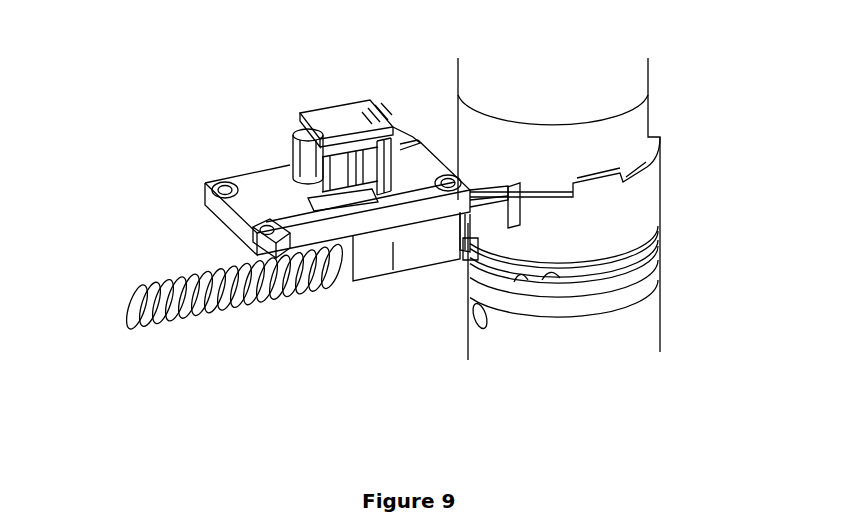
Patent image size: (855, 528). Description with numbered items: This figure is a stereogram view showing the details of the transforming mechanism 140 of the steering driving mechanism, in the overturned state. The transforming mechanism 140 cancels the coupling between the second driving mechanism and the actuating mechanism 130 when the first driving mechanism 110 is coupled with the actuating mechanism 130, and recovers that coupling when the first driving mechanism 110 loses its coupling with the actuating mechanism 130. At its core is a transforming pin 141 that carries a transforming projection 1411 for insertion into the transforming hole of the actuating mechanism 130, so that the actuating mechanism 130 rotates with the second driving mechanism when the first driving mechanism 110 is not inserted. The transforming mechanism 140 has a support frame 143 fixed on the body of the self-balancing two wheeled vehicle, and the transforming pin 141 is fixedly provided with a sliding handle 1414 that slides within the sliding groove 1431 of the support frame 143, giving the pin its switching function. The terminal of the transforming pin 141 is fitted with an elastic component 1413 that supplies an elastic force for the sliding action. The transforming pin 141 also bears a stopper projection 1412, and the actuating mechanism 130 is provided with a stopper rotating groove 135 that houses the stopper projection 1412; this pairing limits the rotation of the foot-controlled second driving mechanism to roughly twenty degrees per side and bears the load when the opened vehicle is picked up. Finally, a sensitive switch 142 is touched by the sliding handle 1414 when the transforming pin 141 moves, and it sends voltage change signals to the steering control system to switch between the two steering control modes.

The first driving mechanism 110 is at (650, 312).
The actuating mechanism 130 is at (641, 210).
The stopper rotating groove 135 is at (470, 253).
The transforming mechanism 140 is at (213, 229).
The transforming pin 141 is at (393, 244).
The transforming projection 1411 is at (473, 247).
The stopper projection 1412 is at (490, 192).
The elastic component 1413 is at (203, 310).
The sliding handle 1414 is at (392, 168).
The sensitive switch 142 is at (327, 123).
The support frame 143 is at (312, 198).
The sliding groove 1431 is at (333, 203).